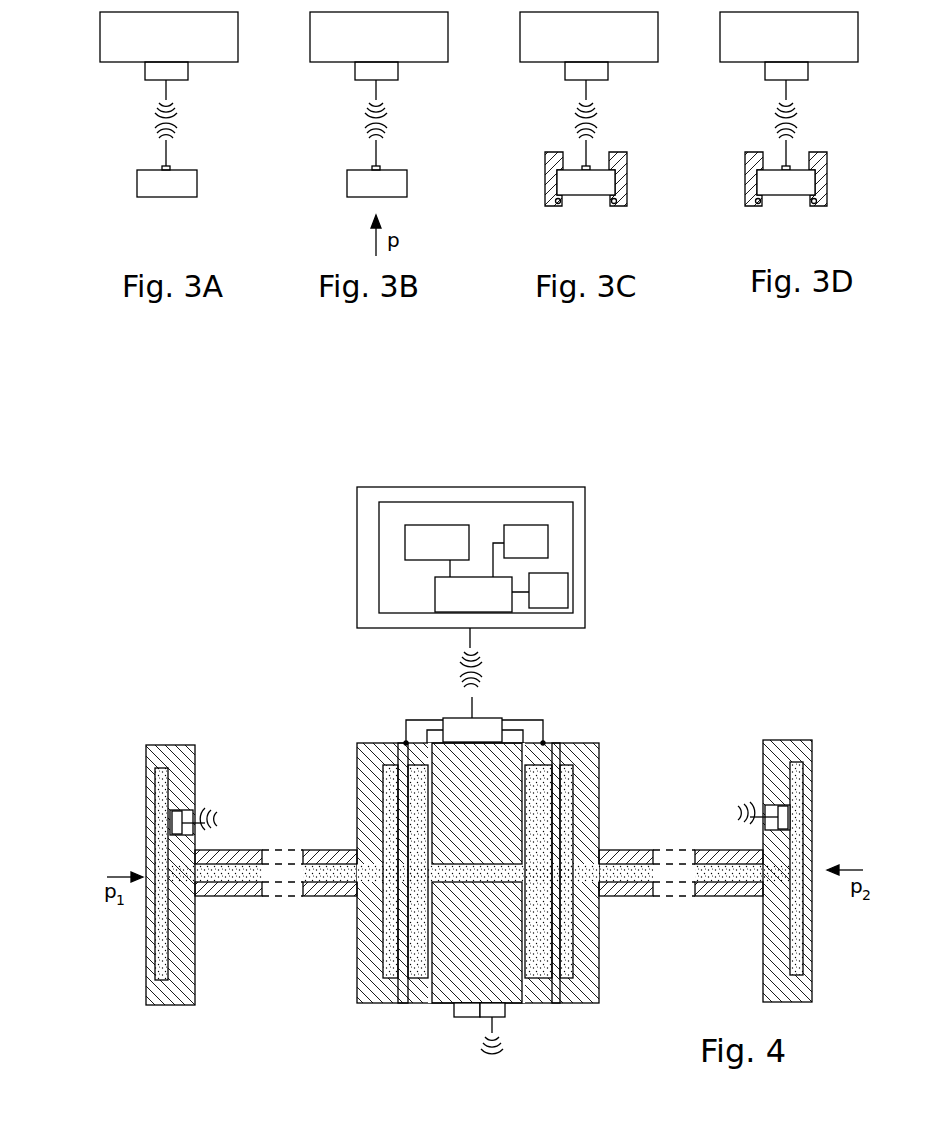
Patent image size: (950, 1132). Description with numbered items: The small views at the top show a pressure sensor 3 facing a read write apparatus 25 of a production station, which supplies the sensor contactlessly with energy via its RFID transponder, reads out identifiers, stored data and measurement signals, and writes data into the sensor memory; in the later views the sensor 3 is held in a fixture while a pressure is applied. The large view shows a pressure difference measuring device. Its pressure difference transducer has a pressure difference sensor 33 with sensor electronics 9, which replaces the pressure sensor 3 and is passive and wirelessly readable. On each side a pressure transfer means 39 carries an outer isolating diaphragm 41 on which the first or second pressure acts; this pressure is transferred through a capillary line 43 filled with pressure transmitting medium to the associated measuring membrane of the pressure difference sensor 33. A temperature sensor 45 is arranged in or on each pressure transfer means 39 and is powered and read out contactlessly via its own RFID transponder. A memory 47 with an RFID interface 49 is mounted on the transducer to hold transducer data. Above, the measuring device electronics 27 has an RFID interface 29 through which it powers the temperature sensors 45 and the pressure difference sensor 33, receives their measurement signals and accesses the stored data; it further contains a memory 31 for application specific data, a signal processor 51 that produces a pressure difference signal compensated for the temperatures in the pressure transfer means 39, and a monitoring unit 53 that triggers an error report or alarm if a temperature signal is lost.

In FIG. 3A, the pressure sensor 3 is at (182, 183).
In FIG. 3B, the pressure sensor 3 is at (392, 183).
In FIG. 3C, the pressure sensor 3 is at (602, 183).
In FIG. 3D, the pressure sensor 3 is at (802, 183).
In FIG. 3A, the read write apparatus 25 is at (180, 70).
In FIG. 3B, the read write apparatus 25 is at (390, 70).
In FIG. 3C, the read write apparatus 25 is at (600, 70).
In FIG. 3D, the read write apparatus 25 is at (800, 70).
In FIG. 4, the measuring device electronics 27 is at (432, 518).
In FIG. 4, the RFID interface 29 is at (473, 594).
In FIG. 4, the memory 31 is at (526, 541).
In FIG. 4, the signal processor 51 is at (437, 542).
In FIG. 4, the monitoring unit 53 is at (548, 590).
In FIG. 4, the pressure difference sensor 33 is at (374, 719).
In FIG. 4, the sensor electronics 9 is at (474, 731).
In FIG. 4, the pressure transfer means 39 is at (175, 752).
In FIG. 4, the isolating diaphragm 41 is at (150, 845).
In FIG. 4, the capillary line 43 is at (230, 897).
In FIG. 4, the temperature sensor 45 is at (210, 800).
In FIG. 4, the memory 47 is at (458, 1010).
In FIG. 4, the RFID interface 49 is at (500, 1010).